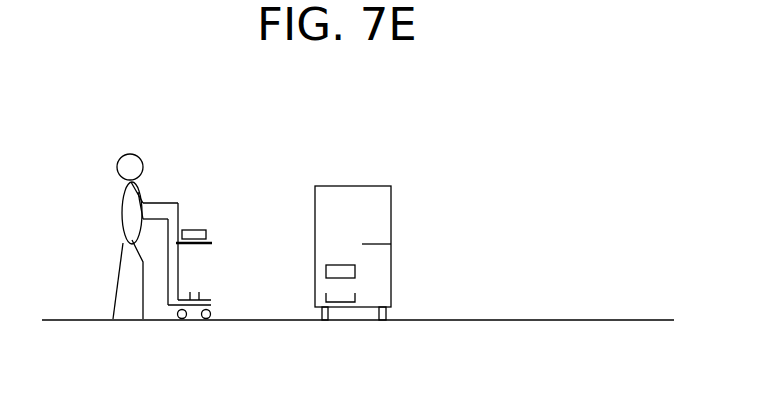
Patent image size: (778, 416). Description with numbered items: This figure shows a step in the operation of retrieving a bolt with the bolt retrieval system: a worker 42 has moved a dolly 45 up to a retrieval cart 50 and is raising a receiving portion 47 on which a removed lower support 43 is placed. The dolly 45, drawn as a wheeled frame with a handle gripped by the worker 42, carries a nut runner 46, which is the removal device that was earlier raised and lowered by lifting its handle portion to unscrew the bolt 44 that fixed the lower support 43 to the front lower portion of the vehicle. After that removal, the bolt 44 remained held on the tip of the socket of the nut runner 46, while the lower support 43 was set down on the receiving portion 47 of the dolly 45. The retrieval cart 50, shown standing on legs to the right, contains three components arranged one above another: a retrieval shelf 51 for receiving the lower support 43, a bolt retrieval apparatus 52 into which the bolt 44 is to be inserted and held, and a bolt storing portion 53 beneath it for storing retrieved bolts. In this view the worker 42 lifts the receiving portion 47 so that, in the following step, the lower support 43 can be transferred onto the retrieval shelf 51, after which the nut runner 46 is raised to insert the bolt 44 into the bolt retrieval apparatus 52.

The worker 42 is at (120, 133).
The lower support 43 is at (190, 229).
The bolt 44 is at (191, 292).
The dolly 45 is at (164, 298).
The nut runner 46 is at (207, 300).
The receiving portion 47 is at (211, 243).
The retrieval cart 50 is at (367, 151).
The retrieval shelf 51 is at (375, 244).
The bolt retrieval apparatus 52 is at (355, 270).
The bolt storing portion 53 is at (355, 297).